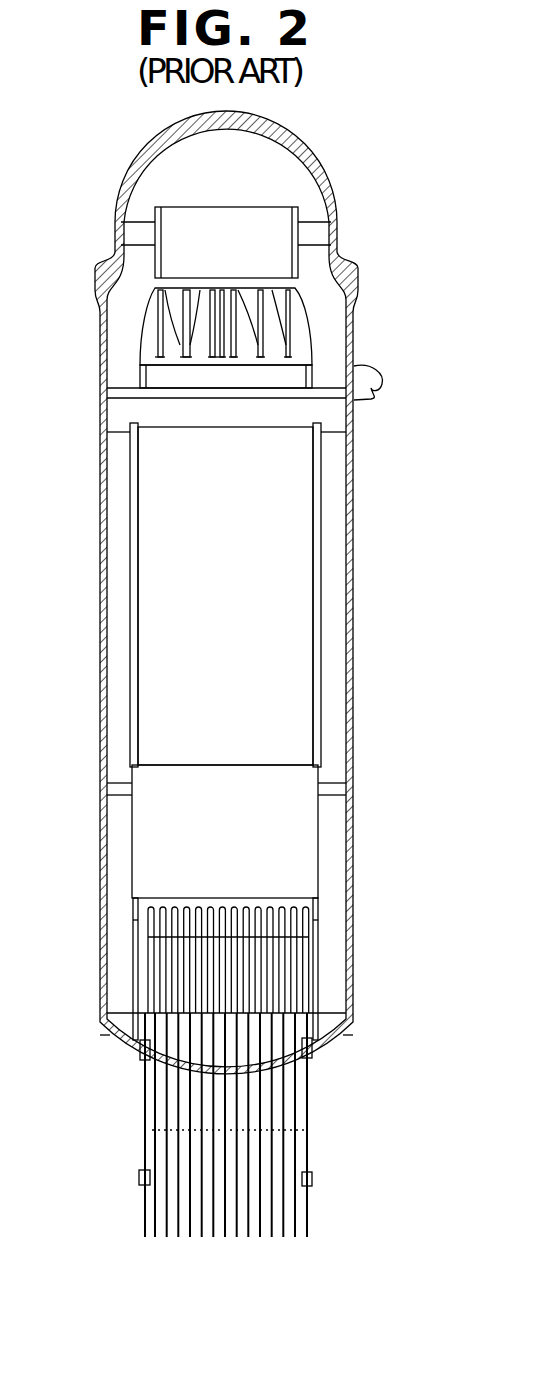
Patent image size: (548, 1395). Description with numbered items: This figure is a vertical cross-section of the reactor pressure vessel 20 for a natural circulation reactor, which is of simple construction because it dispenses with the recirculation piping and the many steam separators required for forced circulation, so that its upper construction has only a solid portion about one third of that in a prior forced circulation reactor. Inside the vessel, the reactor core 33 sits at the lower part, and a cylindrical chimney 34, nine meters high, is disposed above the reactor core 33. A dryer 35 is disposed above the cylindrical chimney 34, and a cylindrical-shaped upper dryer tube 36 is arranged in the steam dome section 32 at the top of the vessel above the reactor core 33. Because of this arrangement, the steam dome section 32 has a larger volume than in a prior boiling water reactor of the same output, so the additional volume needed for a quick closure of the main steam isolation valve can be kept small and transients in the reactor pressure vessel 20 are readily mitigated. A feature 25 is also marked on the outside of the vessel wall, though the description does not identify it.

The reactor pressure vessel 20 is at (352, 720).
The vessel support 25 is at (372, 399).
The steam dome section 32 is at (302, 162).
The reactor core 33 is at (286, 864).
The cylindrical chimney 34 is at (320, 630).
The dryer 35 is at (292, 328).
The upper dryer tube 36 is at (301, 216).